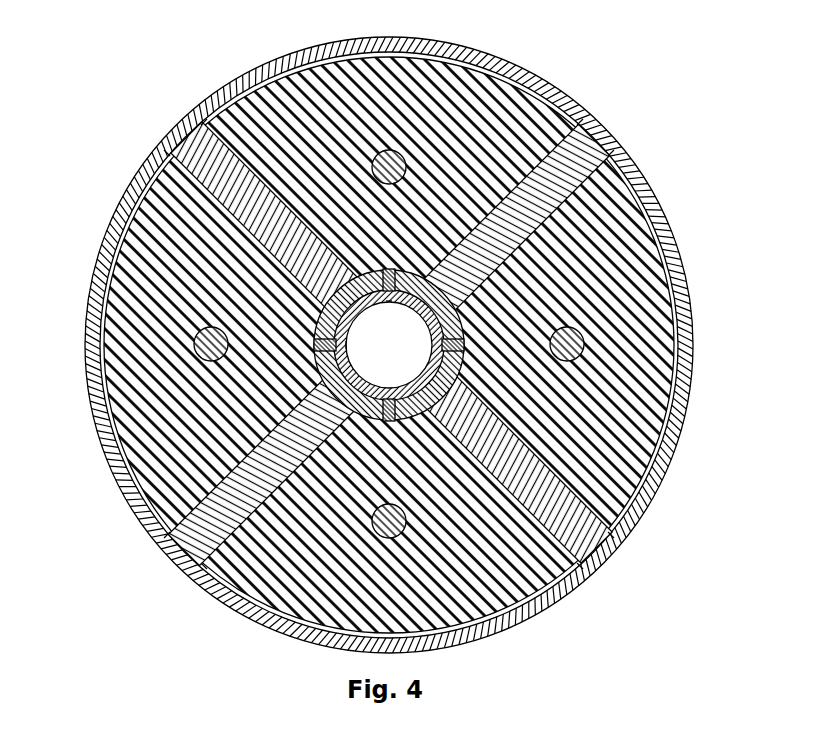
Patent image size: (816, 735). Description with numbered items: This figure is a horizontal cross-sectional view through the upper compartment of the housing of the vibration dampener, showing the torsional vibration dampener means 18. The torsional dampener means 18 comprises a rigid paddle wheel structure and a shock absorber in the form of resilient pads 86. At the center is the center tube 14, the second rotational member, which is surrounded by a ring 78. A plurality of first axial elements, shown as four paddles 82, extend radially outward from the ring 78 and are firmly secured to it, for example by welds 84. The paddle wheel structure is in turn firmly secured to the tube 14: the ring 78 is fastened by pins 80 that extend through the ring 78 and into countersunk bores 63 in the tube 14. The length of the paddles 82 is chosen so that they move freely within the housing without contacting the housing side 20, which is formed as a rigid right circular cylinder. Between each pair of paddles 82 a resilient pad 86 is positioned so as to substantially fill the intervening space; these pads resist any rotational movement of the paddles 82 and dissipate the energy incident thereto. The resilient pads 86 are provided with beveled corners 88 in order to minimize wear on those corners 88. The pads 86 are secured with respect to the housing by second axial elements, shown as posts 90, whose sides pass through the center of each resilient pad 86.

The torsional vibration dampener means 18 is at (72, 150).
The side 20 is at (505, 50).
The center tube 14 is at (352, 303).
The countersunk bores 63 is at (393, 302).
The ring 78 is at (428, 352).
The pins 80 is at (390, 266).
The paddles 82 is at (246, 214).
The welds 84 is at (385, 268).
The resilient pads 86 is at (381, 124).
The beveled corners 88 is at (207, 122).
The posts 90 is at (404, 176).